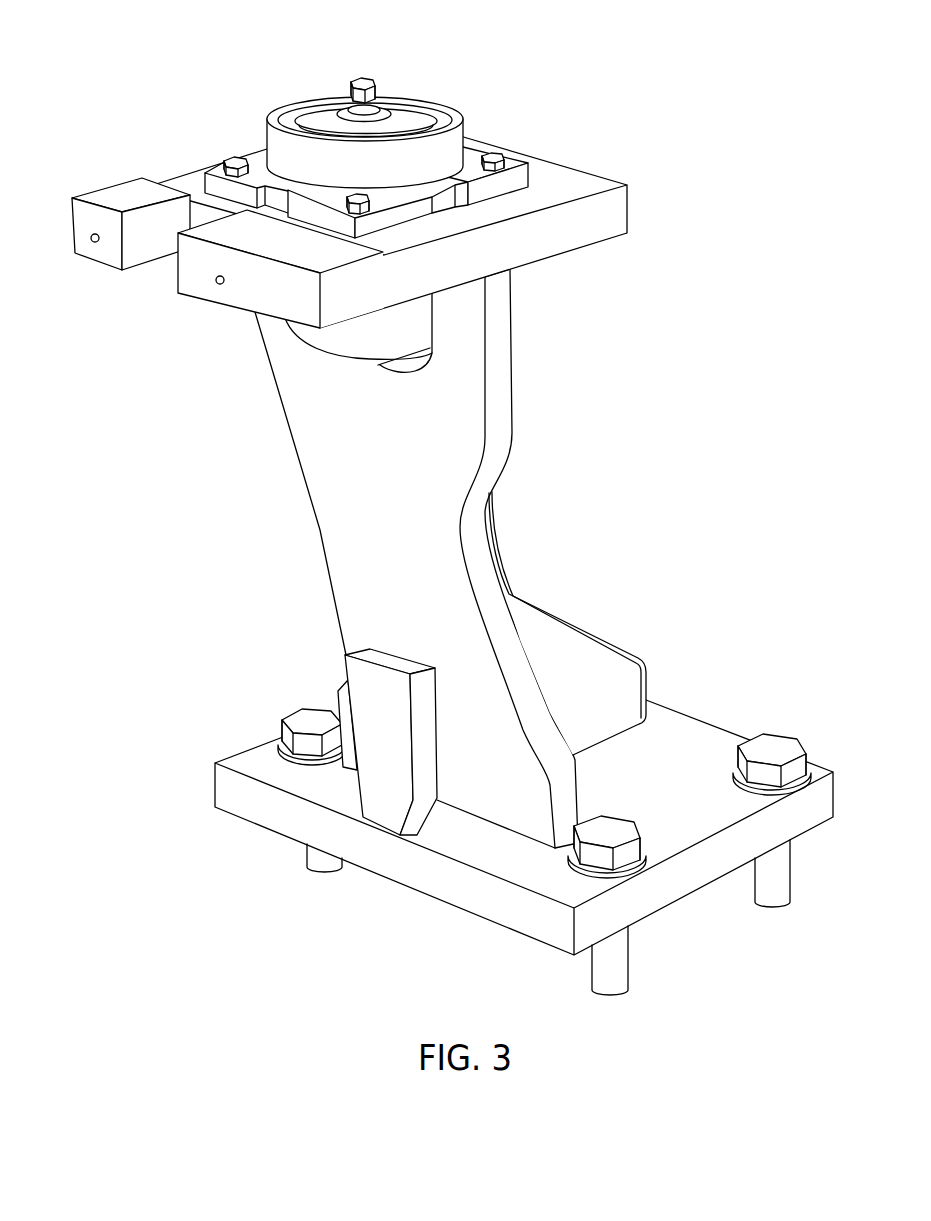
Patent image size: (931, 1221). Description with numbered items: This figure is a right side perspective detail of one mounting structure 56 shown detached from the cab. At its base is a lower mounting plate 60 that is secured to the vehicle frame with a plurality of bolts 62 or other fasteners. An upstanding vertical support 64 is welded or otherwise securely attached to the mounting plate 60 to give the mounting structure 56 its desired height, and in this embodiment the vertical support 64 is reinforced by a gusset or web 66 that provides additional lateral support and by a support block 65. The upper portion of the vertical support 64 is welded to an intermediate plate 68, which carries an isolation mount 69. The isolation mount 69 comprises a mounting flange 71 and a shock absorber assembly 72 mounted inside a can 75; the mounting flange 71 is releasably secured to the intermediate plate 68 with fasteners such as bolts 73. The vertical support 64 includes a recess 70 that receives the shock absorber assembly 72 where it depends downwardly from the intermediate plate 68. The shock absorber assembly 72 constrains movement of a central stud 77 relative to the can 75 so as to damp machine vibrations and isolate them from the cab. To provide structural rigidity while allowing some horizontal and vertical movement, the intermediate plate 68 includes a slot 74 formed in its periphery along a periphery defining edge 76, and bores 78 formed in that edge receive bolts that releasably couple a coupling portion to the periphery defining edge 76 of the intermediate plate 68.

The mounting structure 56 is at (335, 217).
The mounting plate 60 is at (262, 813).
The bolts 62 is at (620, 818).
The vertical support 64 is at (325, 518).
The support block 65 is at (387, 670).
The gusset or web 66 is at (582, 657).
The intermediate plate 68 is at (587, 193).
The isolation mount 69 is at (231, 146).
The recess 70 is at (400, 366).
The mounting flange 71 is at (526, 160).
The shock absorber assembly 72 is at (266, 98).
The bolts 73 is at (494, 150).
The slot 74 is at (146, 250).
The can 75 is at (353, 335).
The periphery defining edge 76 is at (280, 302).
The central stud 77 is at (378, 82).
The bores 78 is at (92, 243).